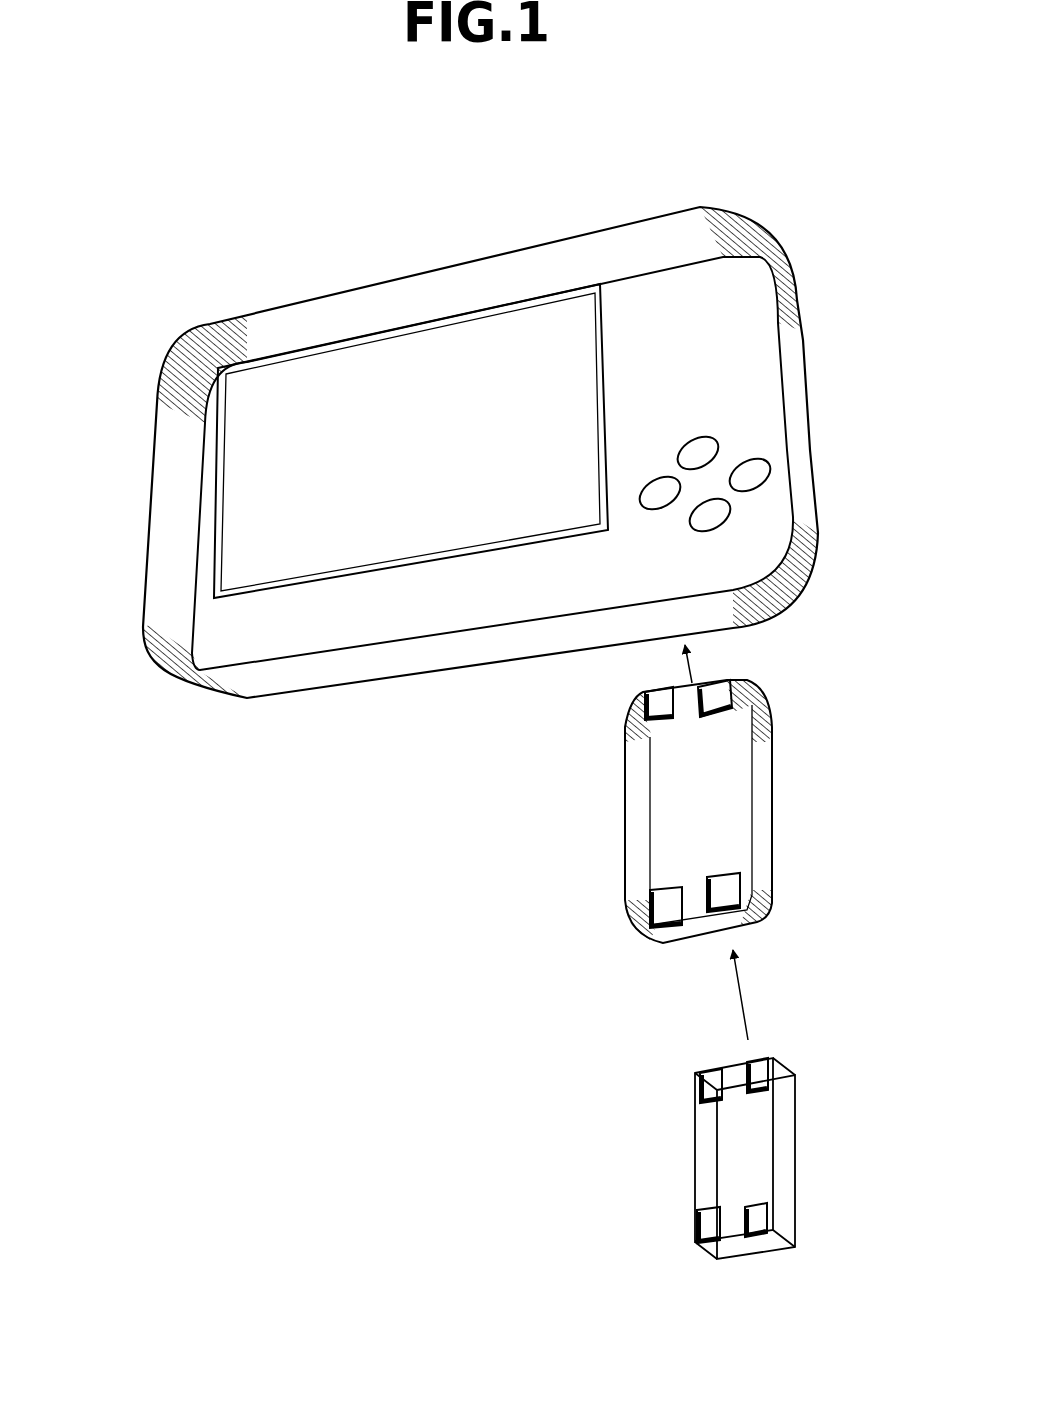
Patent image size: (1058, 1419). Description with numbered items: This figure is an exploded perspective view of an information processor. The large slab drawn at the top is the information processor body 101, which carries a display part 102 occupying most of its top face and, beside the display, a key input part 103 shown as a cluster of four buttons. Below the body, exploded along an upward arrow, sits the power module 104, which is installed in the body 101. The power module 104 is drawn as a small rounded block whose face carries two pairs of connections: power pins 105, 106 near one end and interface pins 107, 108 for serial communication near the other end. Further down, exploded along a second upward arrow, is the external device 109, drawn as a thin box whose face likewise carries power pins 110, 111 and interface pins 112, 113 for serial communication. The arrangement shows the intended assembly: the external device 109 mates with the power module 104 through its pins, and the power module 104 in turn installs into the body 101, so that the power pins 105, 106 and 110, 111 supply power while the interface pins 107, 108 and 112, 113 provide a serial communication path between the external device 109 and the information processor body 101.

The information processor body 101 is at (187, 683).
The display part 102 is at (402, 563).
The key input part 103 is at (762, 468).
The power module 104 is at (688, 841).
The power pin 105 is at (626, 922).
The power pin 106 is at (707, 912).
The interface pin 107 is at (628, 720).
The interface pin 108 is at (688, 697).
The external device 109 is at (724, 1168).
The power pin 110 is at (696, 1226).
The power pin 111 is at (740, 1243).
The interface pin 112 is at (697, 1074).
The interface pin 113 is at (777, 1058).